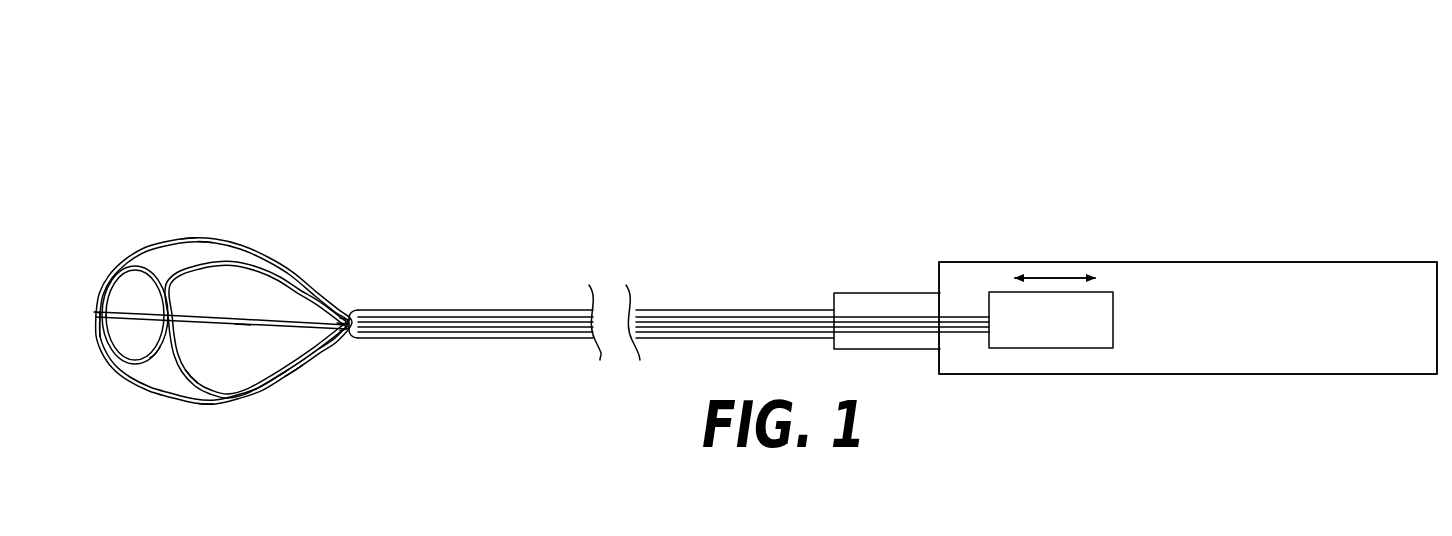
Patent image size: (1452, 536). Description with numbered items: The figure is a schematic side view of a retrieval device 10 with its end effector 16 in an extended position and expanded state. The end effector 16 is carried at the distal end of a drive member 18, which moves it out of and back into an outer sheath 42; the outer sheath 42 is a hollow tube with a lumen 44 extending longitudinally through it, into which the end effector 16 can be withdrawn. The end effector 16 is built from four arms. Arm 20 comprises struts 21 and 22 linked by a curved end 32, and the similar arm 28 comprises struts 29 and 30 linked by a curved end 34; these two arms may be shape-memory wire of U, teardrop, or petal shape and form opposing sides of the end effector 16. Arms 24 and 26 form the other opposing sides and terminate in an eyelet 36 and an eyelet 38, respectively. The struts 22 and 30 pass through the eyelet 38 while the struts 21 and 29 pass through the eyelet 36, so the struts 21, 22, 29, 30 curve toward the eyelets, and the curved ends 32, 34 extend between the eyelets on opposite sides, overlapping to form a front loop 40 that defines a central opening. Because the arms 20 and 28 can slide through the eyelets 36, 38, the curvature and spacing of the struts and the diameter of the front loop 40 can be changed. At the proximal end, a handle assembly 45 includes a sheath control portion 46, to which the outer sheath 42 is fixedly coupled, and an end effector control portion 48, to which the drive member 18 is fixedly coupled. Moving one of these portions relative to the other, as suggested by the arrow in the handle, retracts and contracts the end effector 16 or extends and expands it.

The retrieval device 10 is at (276, 117).
The end effector 16 is at (154, 219).
The drive member 18 is at (458, 310).
The arm 20 is at (296, 274).
The strut 21 is at (202, 250).
The strut 22 is at (242, 258).
The arm 24 is at (245, 333).
The arm 26 is at (263, 317).
The arm 28 is at (322, 386).
The strut 29 is at (203, 399).
The strut 30 is at (193, 378).
The curved end 32 is at (153, 365).
The curved end 34 is at (187, 247).
The eyelet 36 is at (93, 312).
The eyelet 38 is at (152, 308).
The front loop 40 is at (118, 342).
The outer sheath 42 is at (512, 308).
The lumen 44 is at (547, 310).
The handle assembly 45 is at (1294, 249).
The sheath control portion 46 is at (1163, 262).
The end effector control portion 48 is at (1113, 320).